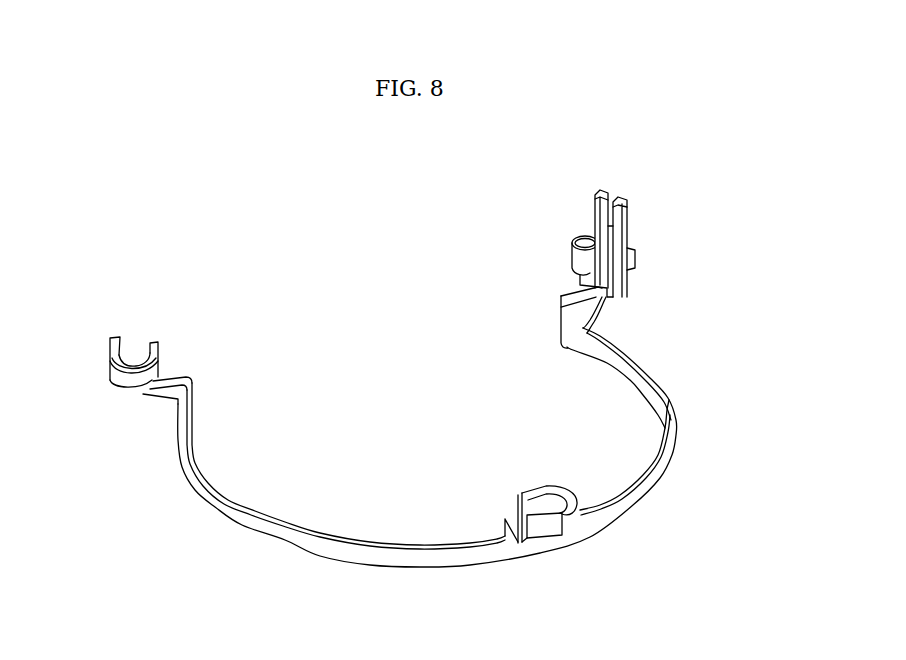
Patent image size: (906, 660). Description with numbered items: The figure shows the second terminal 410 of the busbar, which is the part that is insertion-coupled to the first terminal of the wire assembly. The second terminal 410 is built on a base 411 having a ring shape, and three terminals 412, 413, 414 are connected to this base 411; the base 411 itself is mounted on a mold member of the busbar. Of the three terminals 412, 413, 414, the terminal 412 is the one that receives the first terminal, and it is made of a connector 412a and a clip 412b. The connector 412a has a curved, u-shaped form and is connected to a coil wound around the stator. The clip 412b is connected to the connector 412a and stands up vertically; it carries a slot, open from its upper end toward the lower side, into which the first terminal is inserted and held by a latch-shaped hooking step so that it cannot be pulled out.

The second terminal 410 is at (723, 315).
The base 411 is at (650, 485).
The terminal 412 is at (622, 258).
The connector 412a is at (574, 243).
The clip 412b is at (630, 228).
The terminal 413 is at (543, 529).
The terminal 414 is at (112, 342).